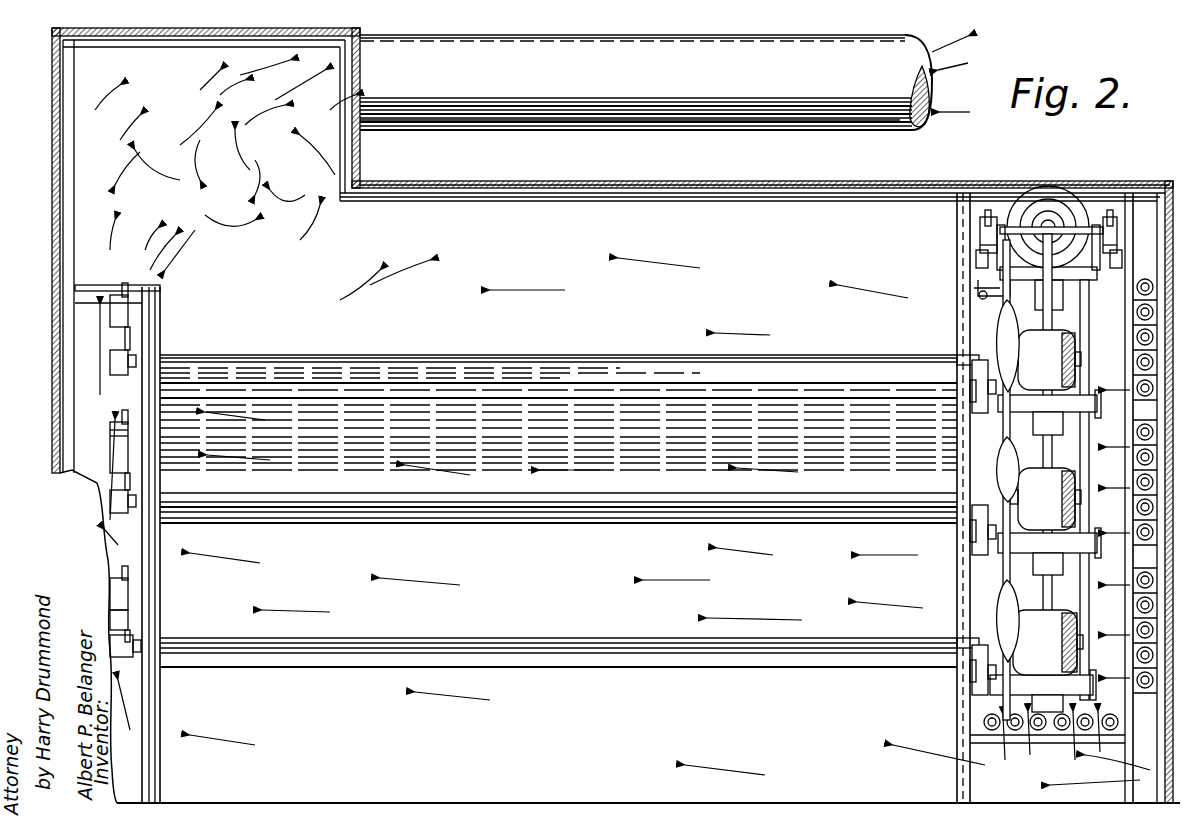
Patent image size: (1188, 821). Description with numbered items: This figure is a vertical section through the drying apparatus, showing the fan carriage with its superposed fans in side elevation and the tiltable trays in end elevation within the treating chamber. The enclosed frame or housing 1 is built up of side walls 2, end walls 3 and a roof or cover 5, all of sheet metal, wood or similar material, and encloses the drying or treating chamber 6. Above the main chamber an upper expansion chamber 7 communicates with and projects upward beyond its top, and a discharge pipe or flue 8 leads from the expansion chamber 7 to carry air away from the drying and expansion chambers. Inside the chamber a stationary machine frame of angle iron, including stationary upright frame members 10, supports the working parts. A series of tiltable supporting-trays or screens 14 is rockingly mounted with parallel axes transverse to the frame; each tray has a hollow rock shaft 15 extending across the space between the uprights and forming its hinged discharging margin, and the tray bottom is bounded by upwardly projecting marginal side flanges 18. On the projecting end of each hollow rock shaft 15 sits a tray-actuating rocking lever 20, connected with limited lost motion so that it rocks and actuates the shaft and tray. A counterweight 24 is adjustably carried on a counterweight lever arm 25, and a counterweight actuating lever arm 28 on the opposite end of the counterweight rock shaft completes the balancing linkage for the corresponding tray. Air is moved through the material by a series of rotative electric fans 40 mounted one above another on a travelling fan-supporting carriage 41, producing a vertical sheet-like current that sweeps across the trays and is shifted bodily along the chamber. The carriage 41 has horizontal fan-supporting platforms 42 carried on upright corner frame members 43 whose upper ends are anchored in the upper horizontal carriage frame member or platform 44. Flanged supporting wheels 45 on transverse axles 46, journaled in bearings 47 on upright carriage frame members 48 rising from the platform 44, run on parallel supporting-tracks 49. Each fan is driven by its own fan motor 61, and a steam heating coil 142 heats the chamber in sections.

The frame or housing 1 is at (502, 182).
The side wall 2 is at (52, 330).
The end wall 3 is at (665, 123).
The roof or cover 5 is at (662, 183).
The drying or treating chamber 6 is at (722, 227).
The upper expansion chamber 7 is at (315, 160).
The discharge pipe or flue 8 is at (592, 117).
The stationary upright frame member 10 is at (150, 346).
The tiltable supporting-tray or screen 14 is at (565, 355).
The hollow rock shaft 15 is at (975, 362).
The marginal side flange 18 is at (957, 334).
The tray-actuating rocking lever 20 is at (112, 480).
The counterweight 24 is at (120, 305).
The counterweight lever arm 25 is at (125, 620).
The counterweight actuating lever arm 28 is at (985, 540).
The rotative electric fan 40 is at (1000, 310).
The travelling fan-supporting carriage 41 is at (1082, 320).
The fan-supporting platform 42 is at (1003, 430).
The upright corner frame member 43 is at (1008, 462).
The upper horizontal carriage frame member or platform 44 is at (1049, 295).
The flanged supporting wheel 45 is at (988, 215).
The transverse axle 46 is at (1012, 218).
The bearing 47 is at (993, 212).
The upright carriage frame member 48 is at (1000, 260).
The supporting-track 49 is at (982, 240).
The fan motor 61 is at (1065, 348).
The steam heating coil 142 is at (1133, 672).